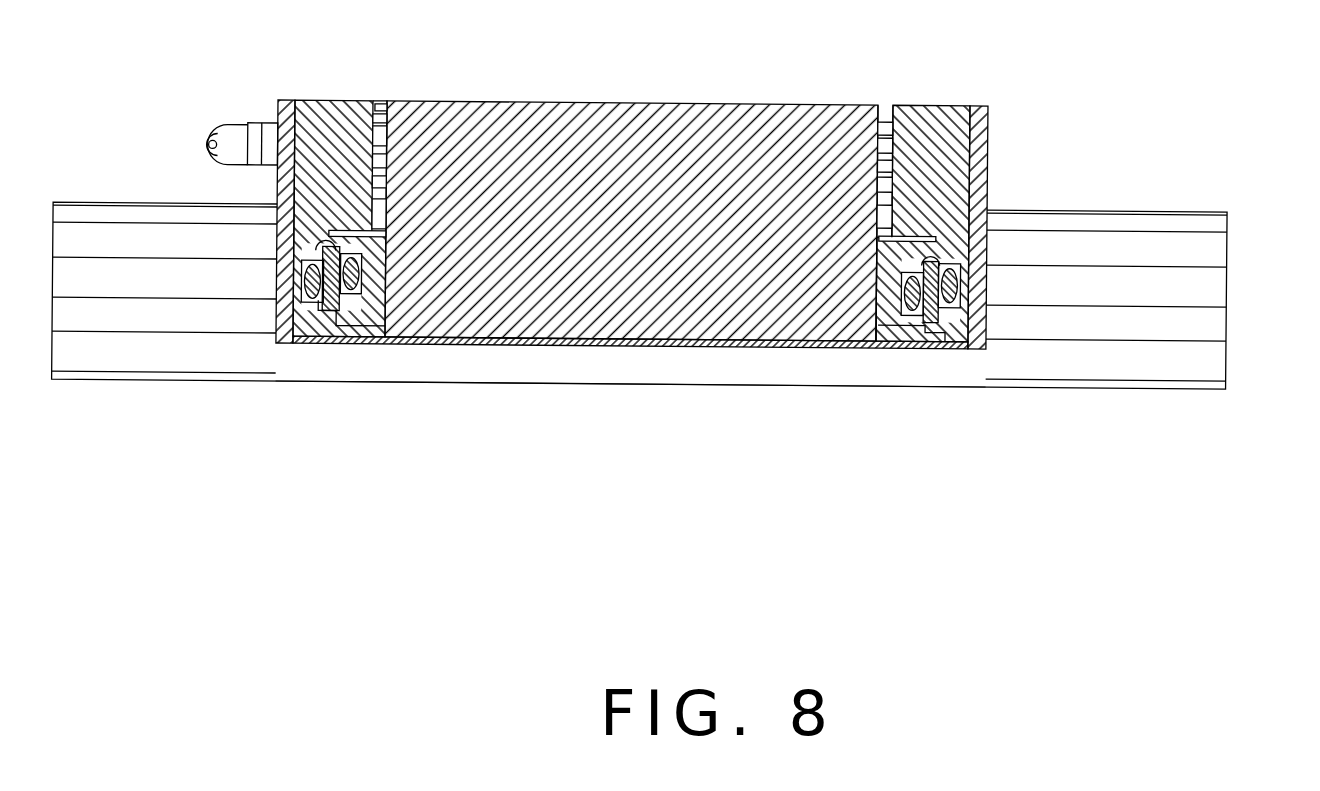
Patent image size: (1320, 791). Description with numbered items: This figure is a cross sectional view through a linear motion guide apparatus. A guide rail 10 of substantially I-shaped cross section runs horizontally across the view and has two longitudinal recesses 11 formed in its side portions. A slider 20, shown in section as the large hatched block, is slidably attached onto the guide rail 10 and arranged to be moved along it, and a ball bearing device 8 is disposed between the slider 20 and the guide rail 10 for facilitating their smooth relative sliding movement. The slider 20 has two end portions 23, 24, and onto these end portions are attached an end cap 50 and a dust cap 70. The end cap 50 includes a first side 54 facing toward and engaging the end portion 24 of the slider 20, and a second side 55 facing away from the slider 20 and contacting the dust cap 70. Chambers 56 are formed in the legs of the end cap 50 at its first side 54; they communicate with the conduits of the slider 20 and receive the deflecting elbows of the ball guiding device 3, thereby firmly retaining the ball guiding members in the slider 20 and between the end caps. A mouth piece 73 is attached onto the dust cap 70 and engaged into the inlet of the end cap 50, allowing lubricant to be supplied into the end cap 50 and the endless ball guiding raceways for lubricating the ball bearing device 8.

The ball guiding device 3 is at (946, 345).
The ball bearing device 8 is at (912, 312).
The guide rail 10 is at (1210, 248).
The longitudinal recesses 11 is at (1198, 320).
The slider 20 is at (634, 130).
The end portion of the slider 23 is at (371, 100).
The end portion of the slider 24 is at (897, 114).
The end cap 50 is at (938, 127).
The first side of the end cap 54 is at (387, 118).
The second side of the end cap 55 is at (975, 162).
The chambers 56 is at (385, 318).
The dust cap 70 is at (286, 100).
The mouth piece 73 is at (207, 146).